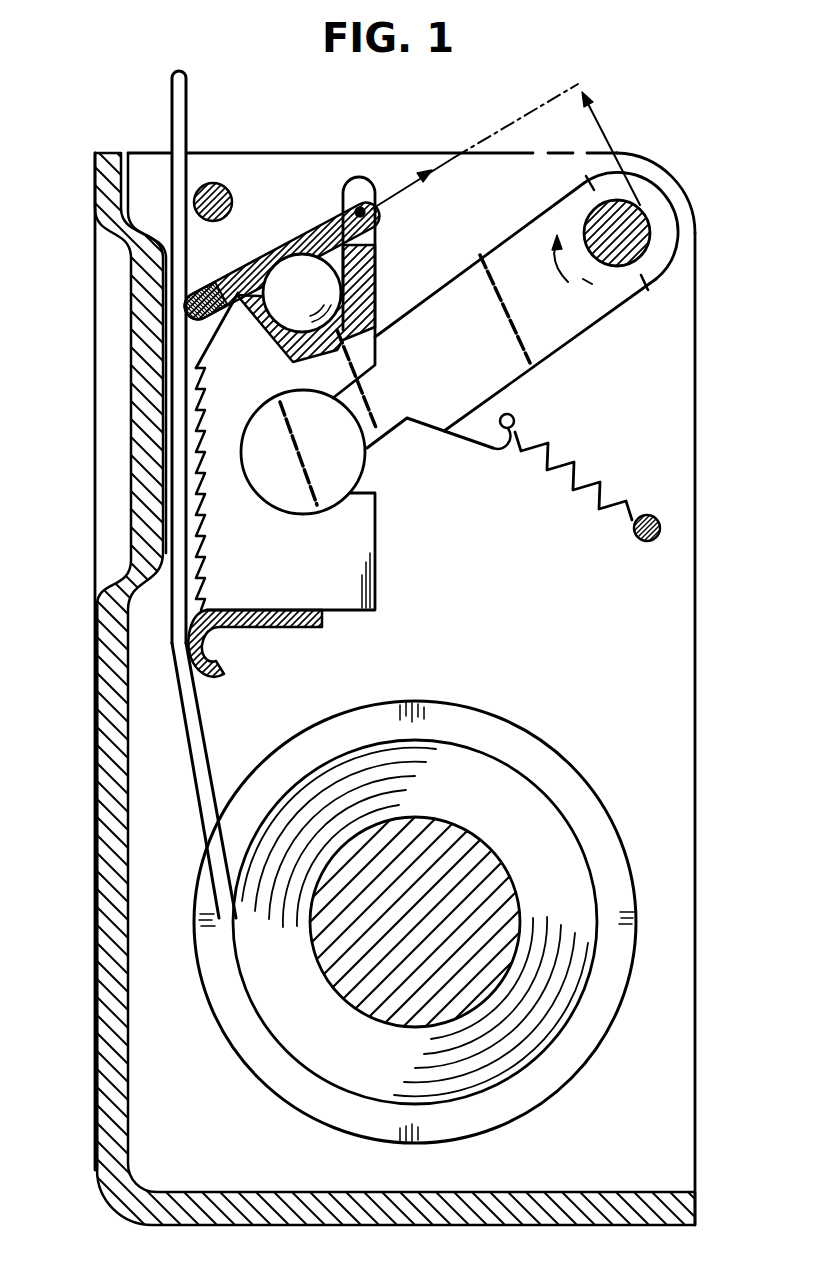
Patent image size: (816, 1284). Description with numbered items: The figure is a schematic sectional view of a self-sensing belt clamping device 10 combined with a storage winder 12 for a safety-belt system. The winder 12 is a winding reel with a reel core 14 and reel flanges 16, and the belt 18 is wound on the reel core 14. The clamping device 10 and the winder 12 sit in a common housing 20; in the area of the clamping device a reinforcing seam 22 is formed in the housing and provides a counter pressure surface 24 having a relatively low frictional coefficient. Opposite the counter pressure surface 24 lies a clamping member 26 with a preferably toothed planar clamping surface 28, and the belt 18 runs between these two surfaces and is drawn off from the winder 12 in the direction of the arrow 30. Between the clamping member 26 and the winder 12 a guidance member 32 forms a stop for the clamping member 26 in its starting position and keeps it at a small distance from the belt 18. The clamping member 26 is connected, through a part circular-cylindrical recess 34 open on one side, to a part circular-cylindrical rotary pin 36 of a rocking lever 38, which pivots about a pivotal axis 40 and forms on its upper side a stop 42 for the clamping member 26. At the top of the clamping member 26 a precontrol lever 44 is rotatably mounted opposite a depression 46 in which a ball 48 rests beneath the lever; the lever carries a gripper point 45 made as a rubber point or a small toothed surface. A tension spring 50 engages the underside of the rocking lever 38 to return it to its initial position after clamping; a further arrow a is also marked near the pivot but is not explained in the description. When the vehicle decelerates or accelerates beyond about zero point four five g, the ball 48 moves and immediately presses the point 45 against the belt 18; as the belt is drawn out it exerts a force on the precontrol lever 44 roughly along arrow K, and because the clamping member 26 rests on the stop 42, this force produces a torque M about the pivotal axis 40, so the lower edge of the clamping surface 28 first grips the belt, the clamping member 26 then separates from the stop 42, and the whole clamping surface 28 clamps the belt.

The self-sensing clamping device 10 is at (322, 485).
The storage winder 12 is at (600, 768).
The reel core 14 is at (505, 905).
The reel flanges 16 is at (318, 1105).
The belt 18 is at (196, 752).
The housing 20 is at (105, 840).
The reinforcing seam 22 is at (140, 428).
The counter pressure surface 24 is at (158, 325).
The clamping member 26 is at (358, 592).
The clamping surface 28 is at (210, 412).
The arrow 30 is at (168, 122).
The guidance member 32 is at (278, 620).
The recess 34 is at (298, 505).
The rotary pin 36 is at (340, 458).
The rocking lever 38 is at (548, 343).
The pivotal axis 40 is at (649, 241).
The stop 42 is at (376, 334).
The precontrol lever 44 is at (273, 251).
The gripper point 45 is at (200, 300).
The depression 46 is at (318, 333).
The ball 48 is at (375, 270).
The tension spring 50 is at (590, 500).
The arrow K is at (398, 190).
The torque M is at (568, 282).
The displacement direction a is at (611, 142).